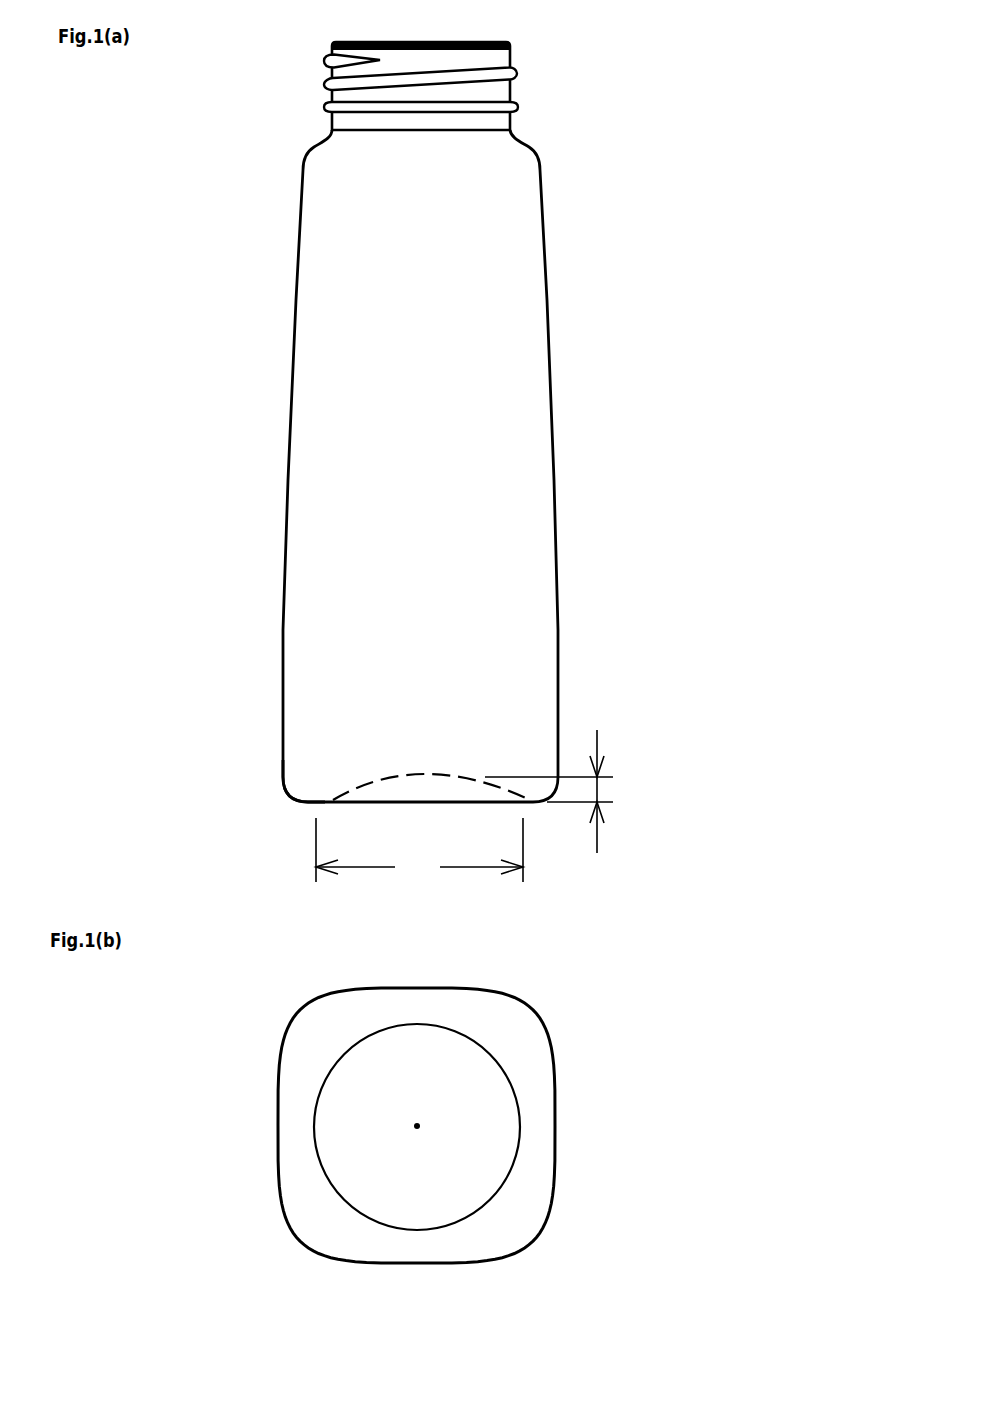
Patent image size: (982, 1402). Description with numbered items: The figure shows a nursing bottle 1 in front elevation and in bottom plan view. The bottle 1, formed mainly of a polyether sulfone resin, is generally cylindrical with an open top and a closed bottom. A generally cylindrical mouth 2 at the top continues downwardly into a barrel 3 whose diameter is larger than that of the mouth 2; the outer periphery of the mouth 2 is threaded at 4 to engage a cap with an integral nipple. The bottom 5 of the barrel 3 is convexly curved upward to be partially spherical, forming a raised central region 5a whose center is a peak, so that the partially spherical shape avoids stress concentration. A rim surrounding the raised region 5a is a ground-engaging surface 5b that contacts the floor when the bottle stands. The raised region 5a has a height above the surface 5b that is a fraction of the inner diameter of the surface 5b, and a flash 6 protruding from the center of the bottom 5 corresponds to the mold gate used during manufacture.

In FIG. 1A, the bottle 1 is at (617, 100).
In FIG. 1A, the mouth 2 is at (507, 60).
In FIG. 1A, the barrel 3 is at (510, 372).
In FIG. 1A, the thread 4 is at (327, 83).
In FIG. 1A, the bottom 5 is at (435, 772).
In FIG. 1A, the raised bottom portion 5a is at (443, 767).
In FIG. 1B, the raised bottom portion 5a is at (495, 1130).
In FIG. 1A, the ground-engaging surface 5b is at (290, 797).
In FIG. 1B, the ground-engaging surface 5b is at (525, 1045).
In FIG. 1B, the flash 6 is at (417, 1126).